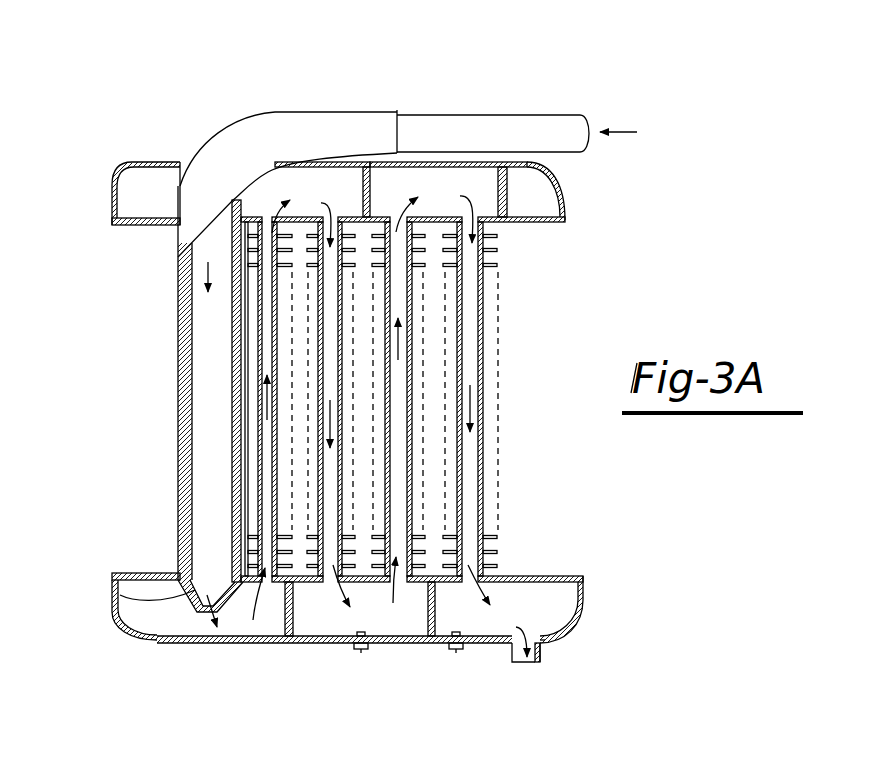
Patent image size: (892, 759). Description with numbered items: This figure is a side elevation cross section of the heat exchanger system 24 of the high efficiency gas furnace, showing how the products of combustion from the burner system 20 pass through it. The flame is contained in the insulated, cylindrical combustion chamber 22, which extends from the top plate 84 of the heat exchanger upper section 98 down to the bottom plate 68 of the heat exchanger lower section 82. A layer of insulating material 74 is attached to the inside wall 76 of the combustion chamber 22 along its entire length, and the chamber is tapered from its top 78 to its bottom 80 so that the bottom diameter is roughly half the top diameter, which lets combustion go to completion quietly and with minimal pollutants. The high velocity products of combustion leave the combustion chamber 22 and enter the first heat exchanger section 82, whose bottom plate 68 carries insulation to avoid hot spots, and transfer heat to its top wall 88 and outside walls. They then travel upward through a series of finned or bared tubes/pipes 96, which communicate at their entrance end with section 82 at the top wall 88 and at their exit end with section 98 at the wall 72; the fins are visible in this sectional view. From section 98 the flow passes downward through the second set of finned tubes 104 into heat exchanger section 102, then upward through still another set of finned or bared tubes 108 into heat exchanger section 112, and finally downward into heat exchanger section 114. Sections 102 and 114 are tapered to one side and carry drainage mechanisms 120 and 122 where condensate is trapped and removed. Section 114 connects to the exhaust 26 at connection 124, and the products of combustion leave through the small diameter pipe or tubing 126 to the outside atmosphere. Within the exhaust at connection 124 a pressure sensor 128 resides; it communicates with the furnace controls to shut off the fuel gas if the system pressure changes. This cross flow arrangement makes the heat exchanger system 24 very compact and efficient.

The burner system 20 is at (240, 162).
The combustion chamber 22 is at (215, 432).
The heat exchanger system 24 is at (547, 176).
The exhaust 26 is at (542, 645).
The bottom plate 68 is at (170, 642).
The wall 72 is at (178, 222).
The insulating material 74 is at (178, 470).
The inside wall 76 is at (178, 322).
The top 78 is at (192, 192).
The bottom 80 is at (120, 595).
The first heat exchanger section 82 is at (120, 617).
The top plate 84 is at (158, 162).
The top wall 88 is at (160, 573).
The finned or bared tubes/pipes 96 is at (258, 378).
The heat exchanger upper section 98 is at (113, 190).
The heat exchanger section 102 is at (263, 636).
The second set of finned tube/pipes 104 is at (342, 302).
The finned or bared tubes/pipes 108 is at (408, 303).
The heat exchanger section 112 is at (477, 177).
The heat exchanger section 114 is at (570, 600).
The drainage mechanism 120 is at (356, 650).
The drainage mechanism 122 is at (451, 650).
The connection 124 is at (513, 655).
The small diameter pipe or tubing 126 is at (520, 668).
The pressure sensor 128 is at (545, 641).